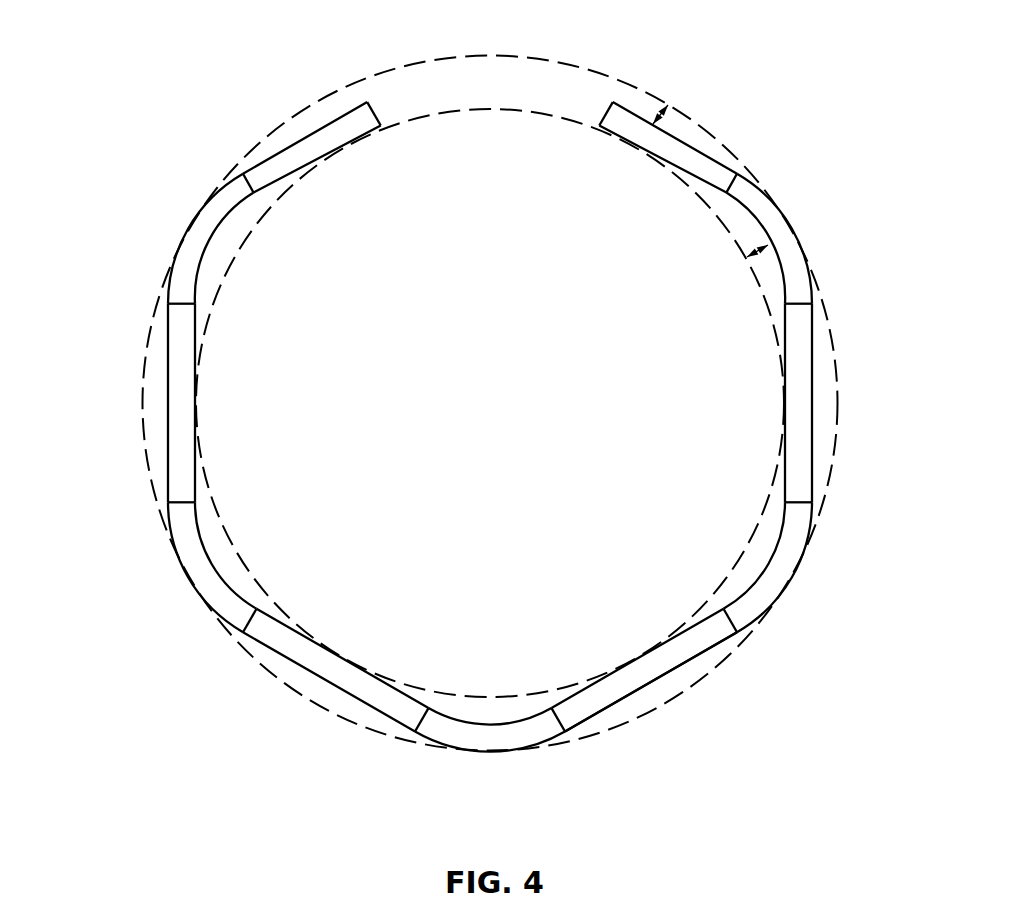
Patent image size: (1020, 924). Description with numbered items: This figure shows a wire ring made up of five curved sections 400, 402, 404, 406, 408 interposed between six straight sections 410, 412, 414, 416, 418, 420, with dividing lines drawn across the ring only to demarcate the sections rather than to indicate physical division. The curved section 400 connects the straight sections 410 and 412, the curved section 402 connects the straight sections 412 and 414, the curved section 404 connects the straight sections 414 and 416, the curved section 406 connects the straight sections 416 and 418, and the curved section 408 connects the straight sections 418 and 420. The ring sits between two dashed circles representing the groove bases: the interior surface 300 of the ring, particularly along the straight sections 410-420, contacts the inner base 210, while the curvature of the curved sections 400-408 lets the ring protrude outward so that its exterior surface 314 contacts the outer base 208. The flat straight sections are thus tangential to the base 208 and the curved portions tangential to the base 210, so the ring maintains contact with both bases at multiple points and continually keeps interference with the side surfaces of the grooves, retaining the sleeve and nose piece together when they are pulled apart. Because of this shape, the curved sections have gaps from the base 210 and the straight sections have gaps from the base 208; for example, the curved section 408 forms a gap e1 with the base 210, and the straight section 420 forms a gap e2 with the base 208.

The base of the annular groove 208 is at (572, 63).
The base of the annular groove 210 is at (487, 112).
The interior surface 300 is at (480, 468).
The curved section 400 is at (197, 245).
The curved section 402 is at (193, 562).
The curved section 404 is at (498, 738).
The curved section 406 is at (777, 567).
The curved section 408 is at (780, 222).
The straight section 410 is at (283, 160).
The straight section 412 is at (167, 412).
The straight section 414 is at (337, 677).
The straight section 416 is at (628, 678).
The straight section 418 is at (795, 412).
The straight section 420 is at (688, 152).
The exterior surface 314 is at (715, 650).
The gap e1 is at (756, 252).
The gap e2 is at (658, 116).